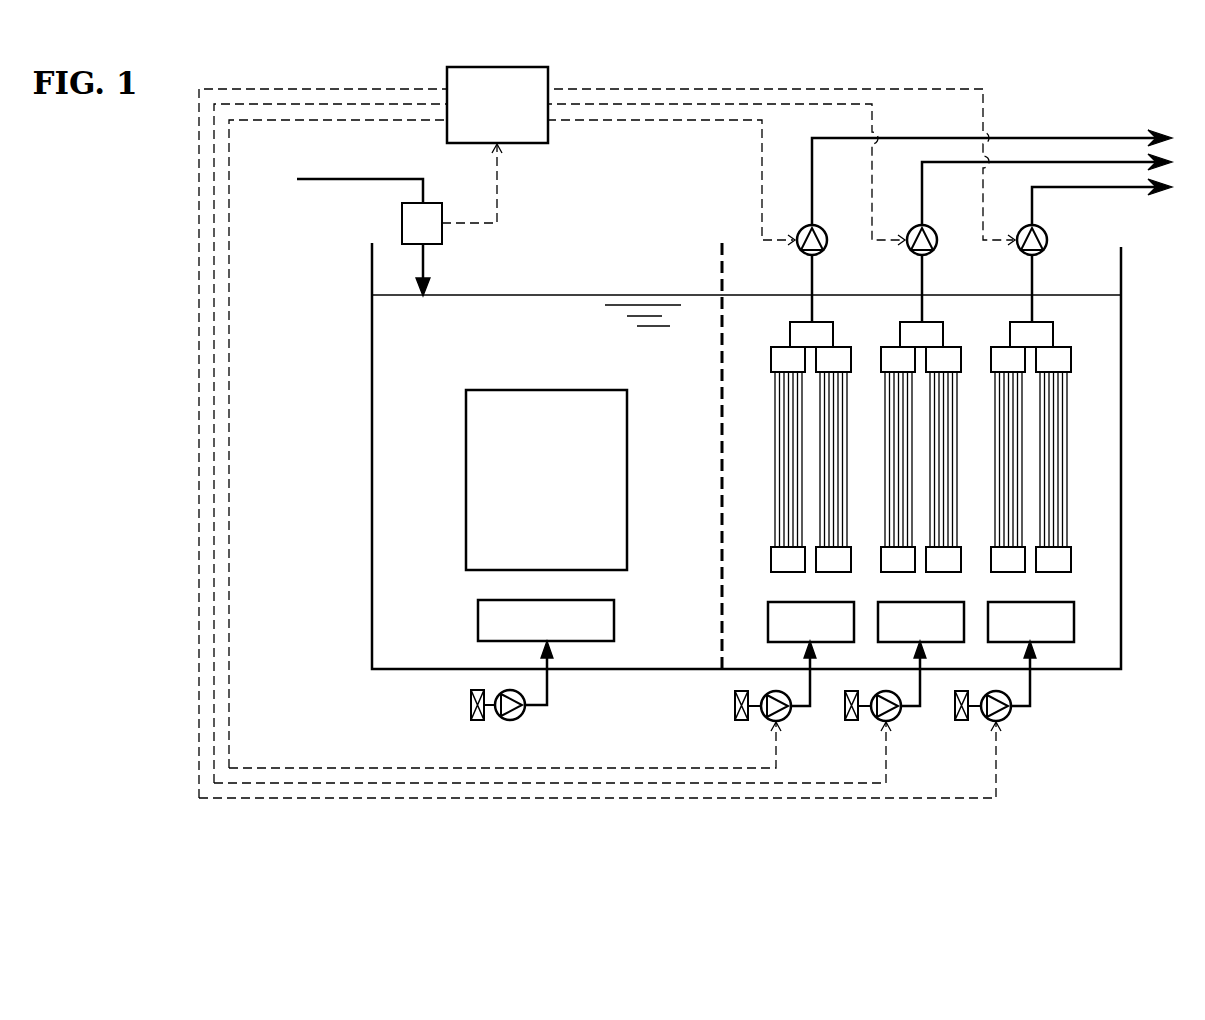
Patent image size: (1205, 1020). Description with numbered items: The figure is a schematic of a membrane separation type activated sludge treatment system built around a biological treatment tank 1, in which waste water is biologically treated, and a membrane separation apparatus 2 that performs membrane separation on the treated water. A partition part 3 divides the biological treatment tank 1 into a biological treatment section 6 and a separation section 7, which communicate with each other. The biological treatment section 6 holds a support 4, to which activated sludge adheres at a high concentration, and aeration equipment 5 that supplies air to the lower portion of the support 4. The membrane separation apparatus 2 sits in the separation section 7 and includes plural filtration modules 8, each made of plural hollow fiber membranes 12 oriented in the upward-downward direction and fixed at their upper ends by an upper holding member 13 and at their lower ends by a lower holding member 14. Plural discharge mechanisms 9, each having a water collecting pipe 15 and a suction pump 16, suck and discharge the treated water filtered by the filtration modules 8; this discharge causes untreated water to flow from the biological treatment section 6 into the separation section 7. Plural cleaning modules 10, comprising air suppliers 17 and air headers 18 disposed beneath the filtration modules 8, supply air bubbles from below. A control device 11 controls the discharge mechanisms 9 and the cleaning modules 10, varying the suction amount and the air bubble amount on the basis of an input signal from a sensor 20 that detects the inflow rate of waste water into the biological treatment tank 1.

The biological treatment tank 1 is at (361, 328).
The membrane separation apparatus 2 is at (1060, 126).
The partition part 3 is at (720, 258).
The support 4 is at (466, 478).
The aeration equipment 5 is at (578, 641).
The biological treatment section 6 is at (667, 487).
The separation section 7 is at (742, 485).
The filtration module 8 is at (781, 335).
The discharge mechanism 9 is at (836, 224).
The cleaning module 10 is at (805, 722).
The control device 11 is at (548, 137).
The hollow fiber membrane 12 is at (1073, 450).
The upper holding member 13 is at (1073, 360).
The lower holding member 14 is at (1073, 560).
The water collecting pipe 15 is at (1035, 283).
The suction pump 16 is at (1020, 232).
The air supplier 17 is at (770, 731).
The air header 18 is at (1050, 642).
The sensor 20 is at (402, 223).